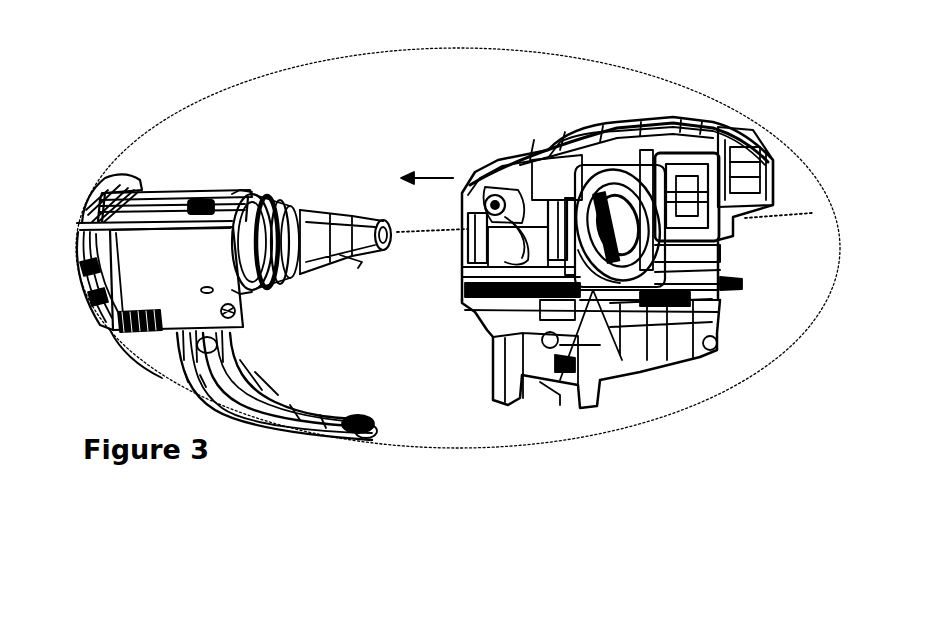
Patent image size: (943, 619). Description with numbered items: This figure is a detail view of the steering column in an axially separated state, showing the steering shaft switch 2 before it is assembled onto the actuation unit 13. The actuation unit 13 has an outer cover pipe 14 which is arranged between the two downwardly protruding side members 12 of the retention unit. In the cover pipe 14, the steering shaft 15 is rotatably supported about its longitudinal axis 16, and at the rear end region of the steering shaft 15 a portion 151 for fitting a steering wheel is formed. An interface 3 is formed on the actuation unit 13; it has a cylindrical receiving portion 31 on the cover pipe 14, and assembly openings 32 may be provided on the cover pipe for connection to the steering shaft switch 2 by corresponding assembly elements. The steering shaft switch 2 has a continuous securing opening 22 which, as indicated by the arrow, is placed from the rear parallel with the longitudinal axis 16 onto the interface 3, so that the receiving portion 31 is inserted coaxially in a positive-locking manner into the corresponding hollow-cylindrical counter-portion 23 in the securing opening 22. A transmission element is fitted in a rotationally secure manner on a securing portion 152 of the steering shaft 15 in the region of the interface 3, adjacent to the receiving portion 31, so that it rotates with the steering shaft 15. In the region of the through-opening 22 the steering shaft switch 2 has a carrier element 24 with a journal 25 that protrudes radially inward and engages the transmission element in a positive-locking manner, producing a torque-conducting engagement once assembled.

The steering shaft switch 2 is at (551, 103).
The interface 3 is at (262, 158).
The side members 12 is at (133, 178).
The actuation unit 13 is at (172, 163).
The cover pipe 14 is at (170, 277).
The steering shaft 15 is at (312, 204).
The longitudinal axis 16 is at (807, 213).
The securing opening 22 is at (661, 120).
The hollow-cylindrical counter-portion 23 is at (718, 127).
The carrier element 24 is at (628, 153).
The journal 25 is at (608, 200).
The cylindrical receiving portion 31 is at (274, 190).
The assembly openings 32 is at (206, 197).
The portion for fitting a steering wheel 151 is at (340, 213).
The securing portion 152 is at (352, 262).